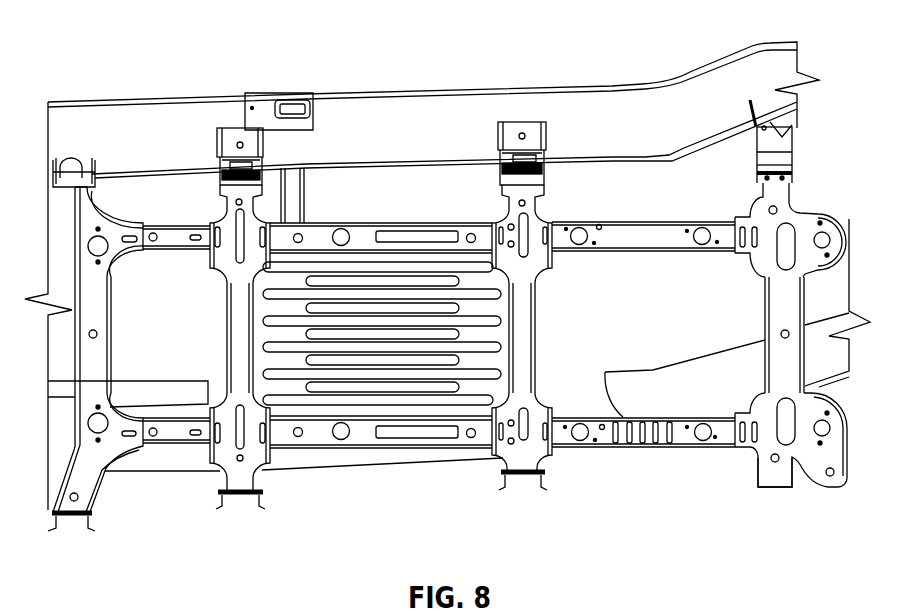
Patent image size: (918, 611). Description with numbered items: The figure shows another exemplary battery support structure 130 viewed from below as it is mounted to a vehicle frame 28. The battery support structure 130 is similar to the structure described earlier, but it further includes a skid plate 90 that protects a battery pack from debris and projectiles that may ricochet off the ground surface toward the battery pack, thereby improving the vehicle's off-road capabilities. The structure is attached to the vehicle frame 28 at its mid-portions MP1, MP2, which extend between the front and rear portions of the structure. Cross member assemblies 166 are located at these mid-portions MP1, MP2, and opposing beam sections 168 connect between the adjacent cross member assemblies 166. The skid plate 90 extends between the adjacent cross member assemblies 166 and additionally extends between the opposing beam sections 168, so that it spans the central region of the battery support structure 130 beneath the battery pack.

The vehicle frame 28 is at (413, 86).
The mid-portion MP1 is at (242, 136).
The mid-portion MP2 is at (533, 128).
The skid plate 90 is at (278, 400).
The battery support structure 130 is at (163, 450).
The cross member assembly 166 is at (83, 478).
The beam section 168 is at (361, 236).